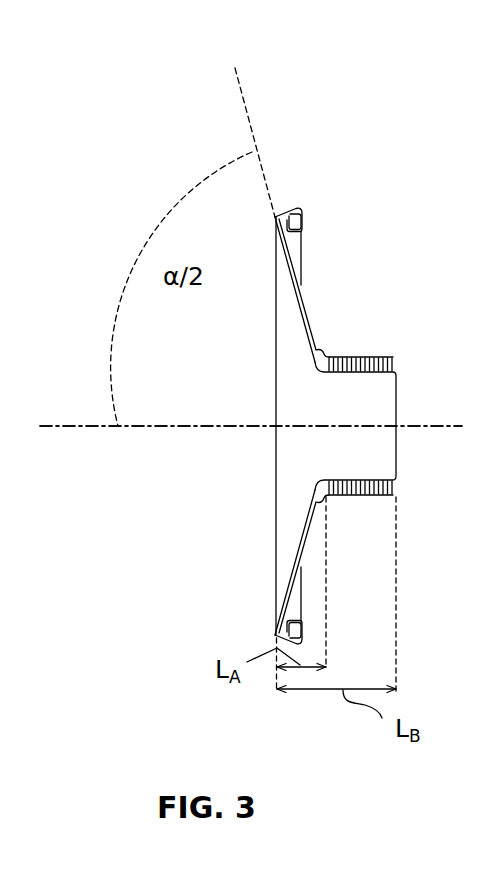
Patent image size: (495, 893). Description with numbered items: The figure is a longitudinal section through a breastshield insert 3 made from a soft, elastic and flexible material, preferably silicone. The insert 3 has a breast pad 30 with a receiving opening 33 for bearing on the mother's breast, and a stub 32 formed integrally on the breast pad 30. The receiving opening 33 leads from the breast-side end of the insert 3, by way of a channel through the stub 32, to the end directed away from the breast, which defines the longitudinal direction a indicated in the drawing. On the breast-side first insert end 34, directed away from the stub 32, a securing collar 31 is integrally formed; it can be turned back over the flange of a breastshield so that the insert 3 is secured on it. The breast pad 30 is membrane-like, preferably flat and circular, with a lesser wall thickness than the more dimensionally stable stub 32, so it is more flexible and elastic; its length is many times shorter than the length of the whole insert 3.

The breastshield insert 3 is at (323, 238).
The breast pad 30 is at (298, 280).
The securing collar 31 is at (297, 210).
The stub 32 is at (348, 357).
The receiving opening 33 is at (287, 426).
The first insert end 34 is at (276, 497).
The longitudinal direction a is at (456, 428).